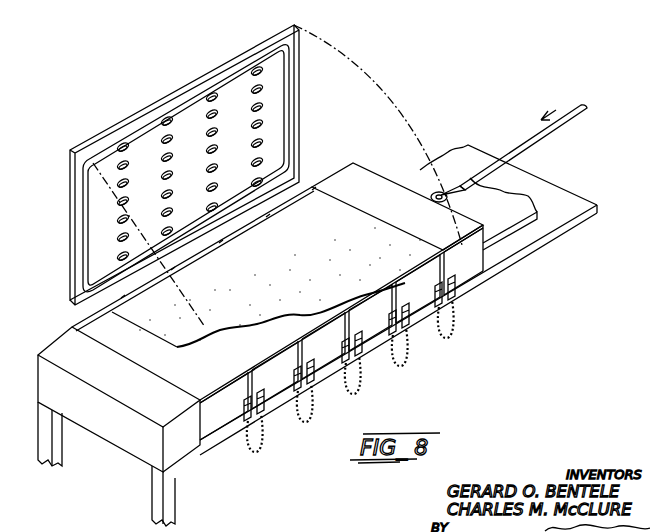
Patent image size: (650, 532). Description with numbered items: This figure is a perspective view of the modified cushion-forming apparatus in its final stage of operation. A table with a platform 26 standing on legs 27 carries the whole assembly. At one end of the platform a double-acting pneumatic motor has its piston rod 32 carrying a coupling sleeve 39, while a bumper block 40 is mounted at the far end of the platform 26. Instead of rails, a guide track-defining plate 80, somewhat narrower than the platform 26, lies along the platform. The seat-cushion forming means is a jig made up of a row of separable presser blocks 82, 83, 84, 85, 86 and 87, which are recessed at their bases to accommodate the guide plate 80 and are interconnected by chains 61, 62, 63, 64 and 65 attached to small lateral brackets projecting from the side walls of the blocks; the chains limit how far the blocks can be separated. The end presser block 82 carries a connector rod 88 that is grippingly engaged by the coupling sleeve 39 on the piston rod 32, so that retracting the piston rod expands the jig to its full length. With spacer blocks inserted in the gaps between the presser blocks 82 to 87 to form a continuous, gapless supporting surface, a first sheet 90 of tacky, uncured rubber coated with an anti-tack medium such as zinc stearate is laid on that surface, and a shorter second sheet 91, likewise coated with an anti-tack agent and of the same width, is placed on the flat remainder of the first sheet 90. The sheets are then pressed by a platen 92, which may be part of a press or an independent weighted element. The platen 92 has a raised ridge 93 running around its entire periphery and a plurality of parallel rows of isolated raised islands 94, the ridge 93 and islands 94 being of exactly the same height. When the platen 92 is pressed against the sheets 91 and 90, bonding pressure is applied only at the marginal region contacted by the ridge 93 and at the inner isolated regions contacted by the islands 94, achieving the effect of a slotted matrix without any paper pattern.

The platform 26 is at (510, 263).
The legs 27 is at (152, 497).
The piston rod 32 is at (528, 142).
The coupling sleeve 39 is at (457, 188).
The bumper block 40 is at (60, 352).
The chain 61 is at (449, 334).
The chain 62 is at (408, 370).
The chain 63 is at (362, 392).
The chain 64 is at (313, 432).
The chain 65 is at (261, 465).
The guide track-defining plate 80 is at (523, 221).
The presser block 82 is at (470, 276).
The presser block 83 is at (422, 306).
The presser block 84 is at (373, 338).
The presser block 85 is at (324, 378).
The presser block 86 is at (273, 402).
The presser block 87 is at (213, 433).
The connector rod 88 is at (432, 199).
The first sheet 90 is at (195, 353).
The second sheet 91 is at (167, 318).
The platen 92 is at (173, 96).
The raised ridge 93 is at (290, 74).
The raised islands 94 is at (263, 143).